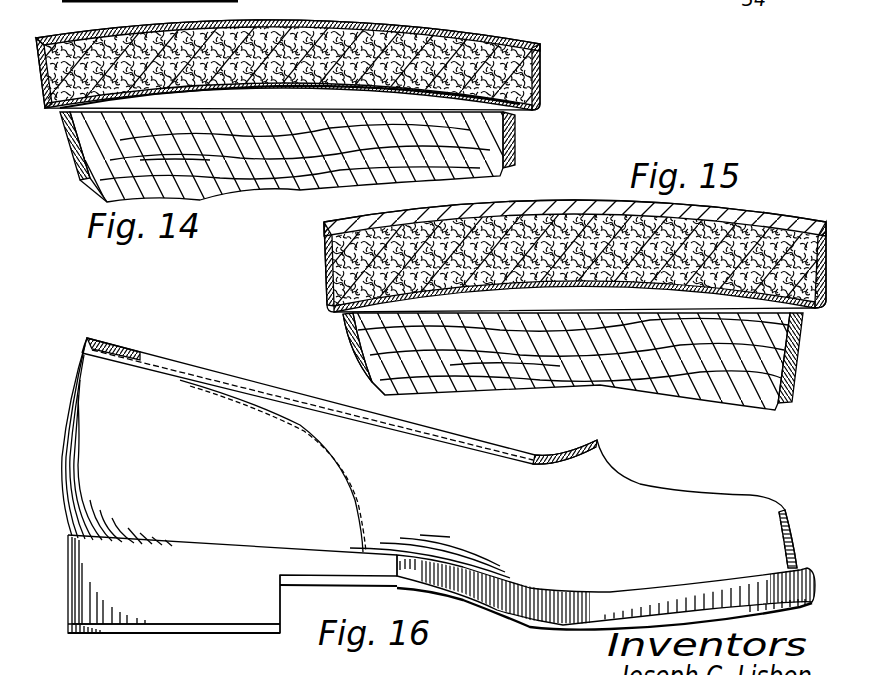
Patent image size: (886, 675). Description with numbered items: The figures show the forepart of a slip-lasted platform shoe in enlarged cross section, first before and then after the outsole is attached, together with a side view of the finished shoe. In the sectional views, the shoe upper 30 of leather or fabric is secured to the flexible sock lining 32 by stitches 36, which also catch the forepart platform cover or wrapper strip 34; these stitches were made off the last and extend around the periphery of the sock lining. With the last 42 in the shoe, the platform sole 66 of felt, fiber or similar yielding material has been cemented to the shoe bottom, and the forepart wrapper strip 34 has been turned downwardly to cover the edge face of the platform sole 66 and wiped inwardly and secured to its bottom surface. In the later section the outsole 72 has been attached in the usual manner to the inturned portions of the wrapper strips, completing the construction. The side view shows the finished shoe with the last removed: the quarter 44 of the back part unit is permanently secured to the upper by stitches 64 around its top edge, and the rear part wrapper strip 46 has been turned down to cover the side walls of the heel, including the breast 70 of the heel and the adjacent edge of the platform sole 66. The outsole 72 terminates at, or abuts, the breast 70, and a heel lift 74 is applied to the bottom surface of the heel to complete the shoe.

In FIG. 14, the shoe upper 30 is at (73, 147).
In FIG. 15, the shoe upper 30 is at (783, 403).
In FIG. 16, the shoe upper 30 is at (665, 495).
In FIG. 14, the sock lining 32 is at (388, 92).
In FIG. 14, the forepart platform cover or wrapper strip 34 is at (72, 33).
In FIG. 15, the forepart platform cover or wrapper strip 34 is at (325, 281).
In FIG. 16, the forepart platform cover or wrapper strip 34 is at (603, 610).
In FIG. 14, the stitches 36 is at (530, 100).
In FIG. 15, the stitches 36 is at (798, 316).
In FIG. 14, the last 42 is at (277, 190).
In FIG. 15, the last 42 is at (670, 360).
In FIG. 16, the quarter 44 is at (87, 385).
In FIG. 16, the rear part wrapper strip 46 is at (97, 572).
In FIG. 16, the stitches 64 is at (178, 382).
In FIG. 14, the platform sole 66 is at (338, 45).
In FIG. 15, the platform sole 66 is at (752, 247).
In FIG. 16, the breast of the heel 70 is at (292, 613).
In FIG. 15, the outsole 72 is at (602, 215).
In FIG. 16, the outsole 72 is at (458, 590).
In FIG. 16, the heel lift 74 is at (187, 628).